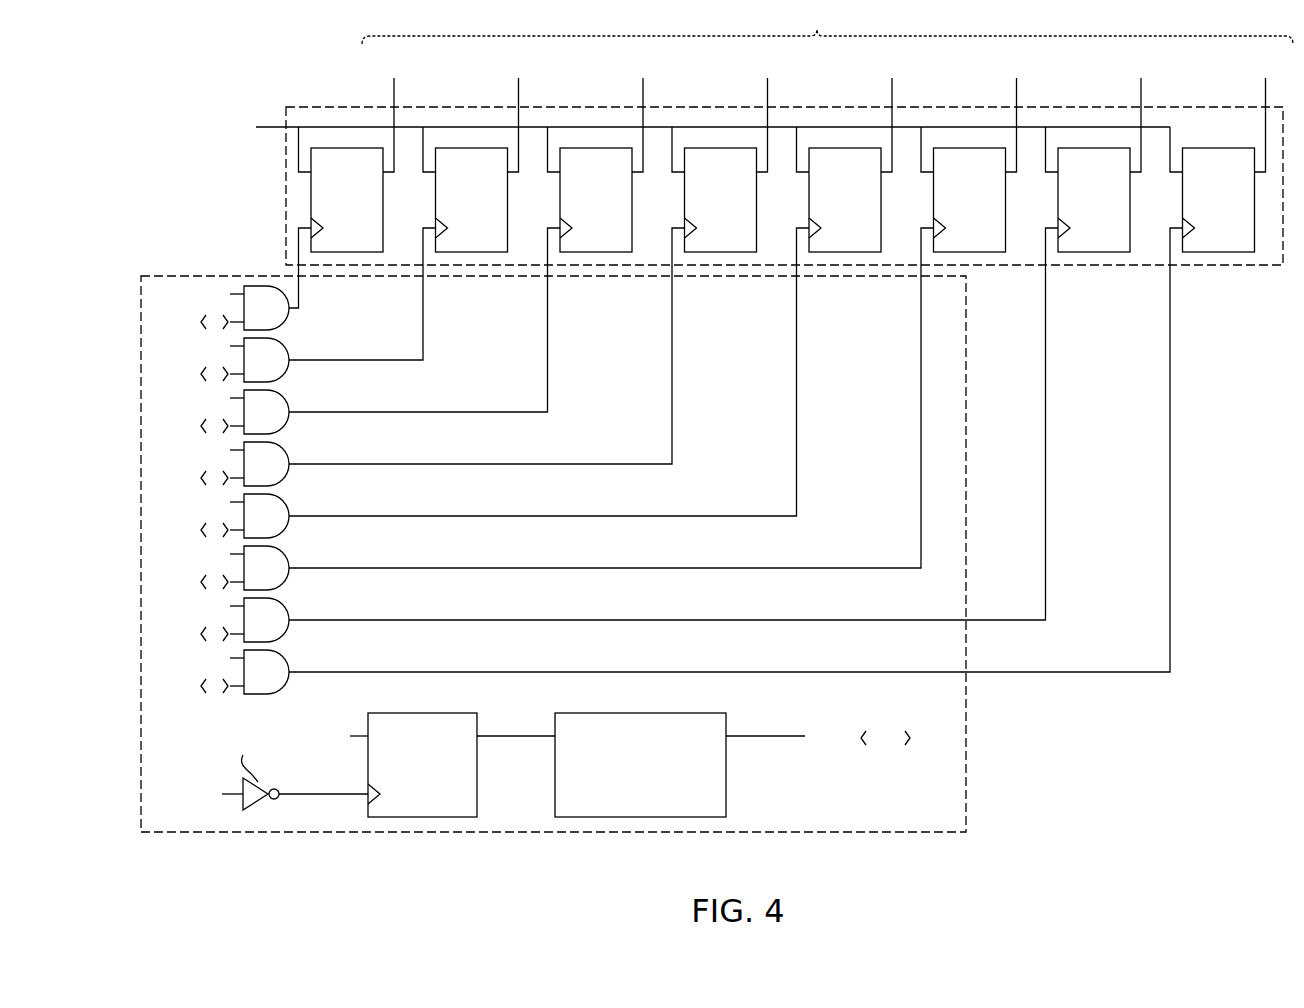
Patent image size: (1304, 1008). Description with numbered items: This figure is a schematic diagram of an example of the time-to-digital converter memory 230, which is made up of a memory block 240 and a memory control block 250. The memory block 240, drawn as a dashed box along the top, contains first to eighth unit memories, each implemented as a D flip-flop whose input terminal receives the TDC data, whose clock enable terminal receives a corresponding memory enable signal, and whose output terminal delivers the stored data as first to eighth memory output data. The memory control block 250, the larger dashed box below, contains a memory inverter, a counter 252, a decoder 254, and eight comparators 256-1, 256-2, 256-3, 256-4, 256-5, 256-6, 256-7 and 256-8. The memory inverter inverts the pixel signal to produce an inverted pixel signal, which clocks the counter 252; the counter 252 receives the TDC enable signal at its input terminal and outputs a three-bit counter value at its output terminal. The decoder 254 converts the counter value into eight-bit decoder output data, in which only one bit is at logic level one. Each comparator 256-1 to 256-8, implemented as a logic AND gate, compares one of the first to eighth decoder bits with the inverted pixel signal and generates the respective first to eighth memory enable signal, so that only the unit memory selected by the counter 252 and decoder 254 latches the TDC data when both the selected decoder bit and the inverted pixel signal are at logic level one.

The TDC memory 230 is at (229, 38).
The memory block 240 is at (303, 105).
The memory control block 250 is at (174, 274).
The counter 252 is at (424, 818).
The decoder 254 is at (642, 818).
The comparator 256-1 is at (289, 318).
The comparator 256-2 is at (289, 370).
The comparator 256-3 is at (289, 422).
The comparator 256-4 is at (289, 474).
The comparator 256-5 is at (289, 526).
The comparator 256-6 is at (289, 578).
The comparator 256-7 is at (289, 630).
The comparator 256-8 is at (289, 682).